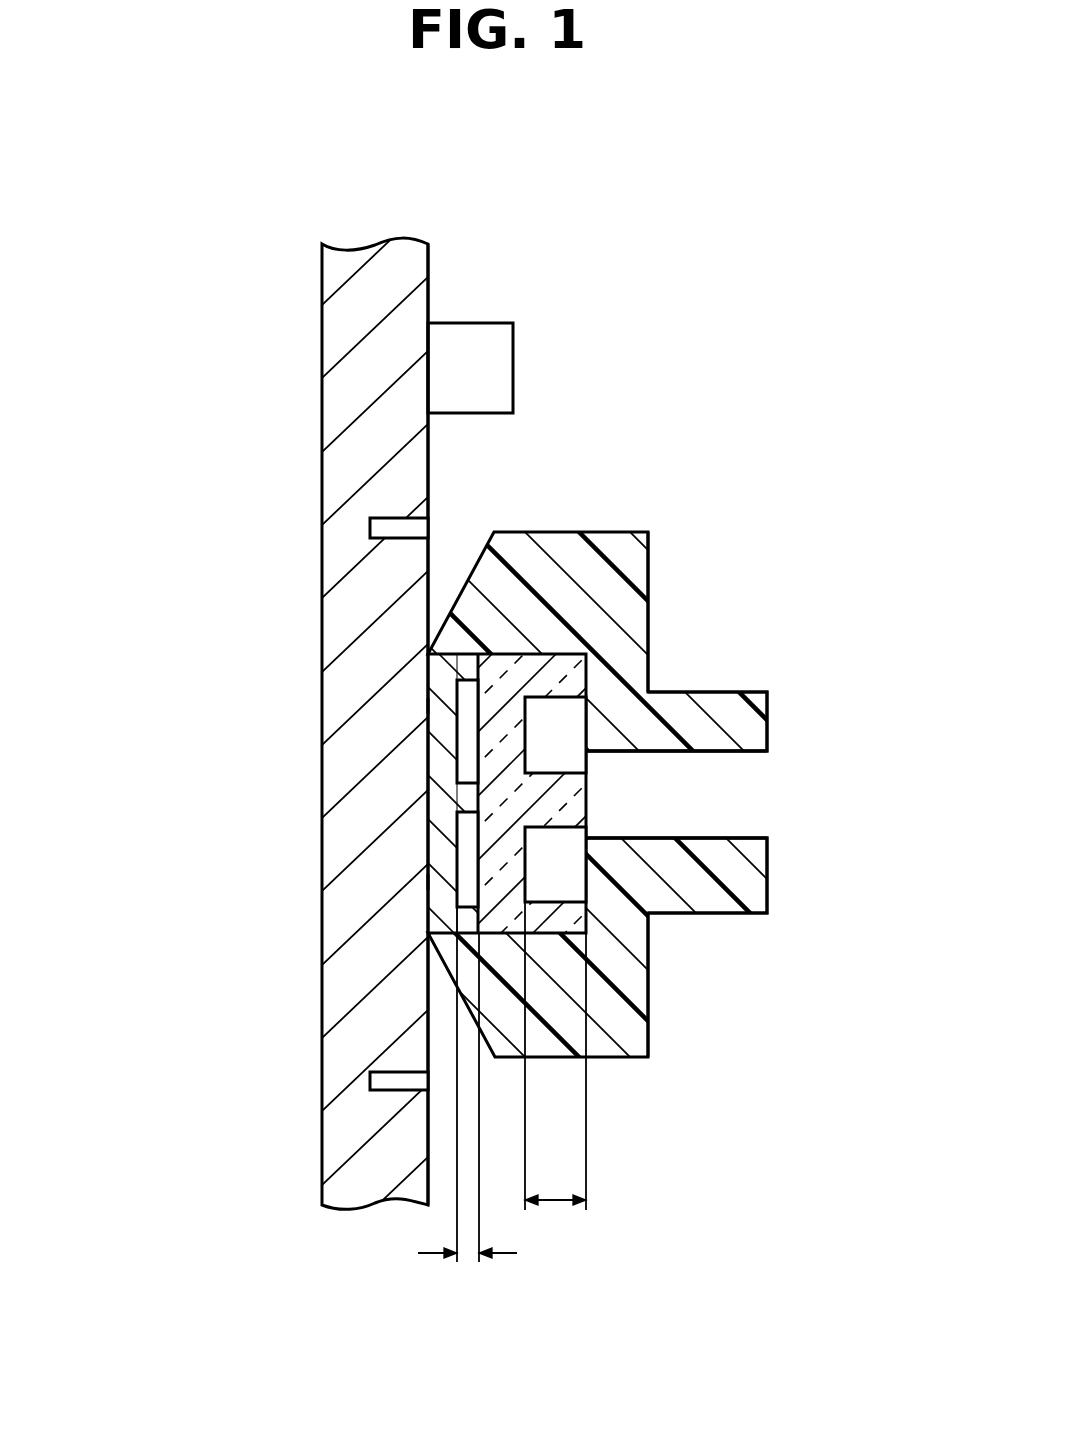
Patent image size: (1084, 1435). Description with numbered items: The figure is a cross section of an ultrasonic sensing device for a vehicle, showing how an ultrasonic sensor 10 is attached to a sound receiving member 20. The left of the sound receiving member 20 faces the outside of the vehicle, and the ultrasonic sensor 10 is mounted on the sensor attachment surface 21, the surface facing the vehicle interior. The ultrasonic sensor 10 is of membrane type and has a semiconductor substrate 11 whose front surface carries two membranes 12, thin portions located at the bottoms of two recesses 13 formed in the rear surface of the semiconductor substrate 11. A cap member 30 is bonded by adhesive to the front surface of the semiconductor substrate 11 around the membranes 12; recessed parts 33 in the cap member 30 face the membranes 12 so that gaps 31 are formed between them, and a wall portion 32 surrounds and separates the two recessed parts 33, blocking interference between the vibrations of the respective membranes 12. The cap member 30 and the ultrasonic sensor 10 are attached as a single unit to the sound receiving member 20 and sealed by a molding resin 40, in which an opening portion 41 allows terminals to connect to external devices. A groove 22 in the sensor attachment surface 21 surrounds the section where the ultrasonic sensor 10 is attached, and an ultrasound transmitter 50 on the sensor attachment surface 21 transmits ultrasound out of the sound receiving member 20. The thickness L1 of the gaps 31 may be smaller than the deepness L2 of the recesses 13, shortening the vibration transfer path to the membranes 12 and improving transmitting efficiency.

The ultrasonic sensor 10 is at (498, 684).
The semiconductor substrate 11 is at (540, 680).
The membranes 12 is at (556, 698).
The recesses 13 is at (652, 693).
The sound receiving member 20 is at (314, 410).
The sensor attachment surface 21 is at (428, 297).
The groove 22 is at (383, 527).
The cap member 30 is at (443, 772).
The gaps 31 is at (467, 728).
The wall portion 32 is at (428, 652).
The recessed parts 33 is at (437, 705).
The molding resin 40 is at (745, 705).
The opening portion 41 is at (735, 753).
The ultrasound transmitter 50 is at (492, 368).
The thickness of the gaps L1 is at (467, 1257).
The deepness of the recesses L2 is at (548, 1203).